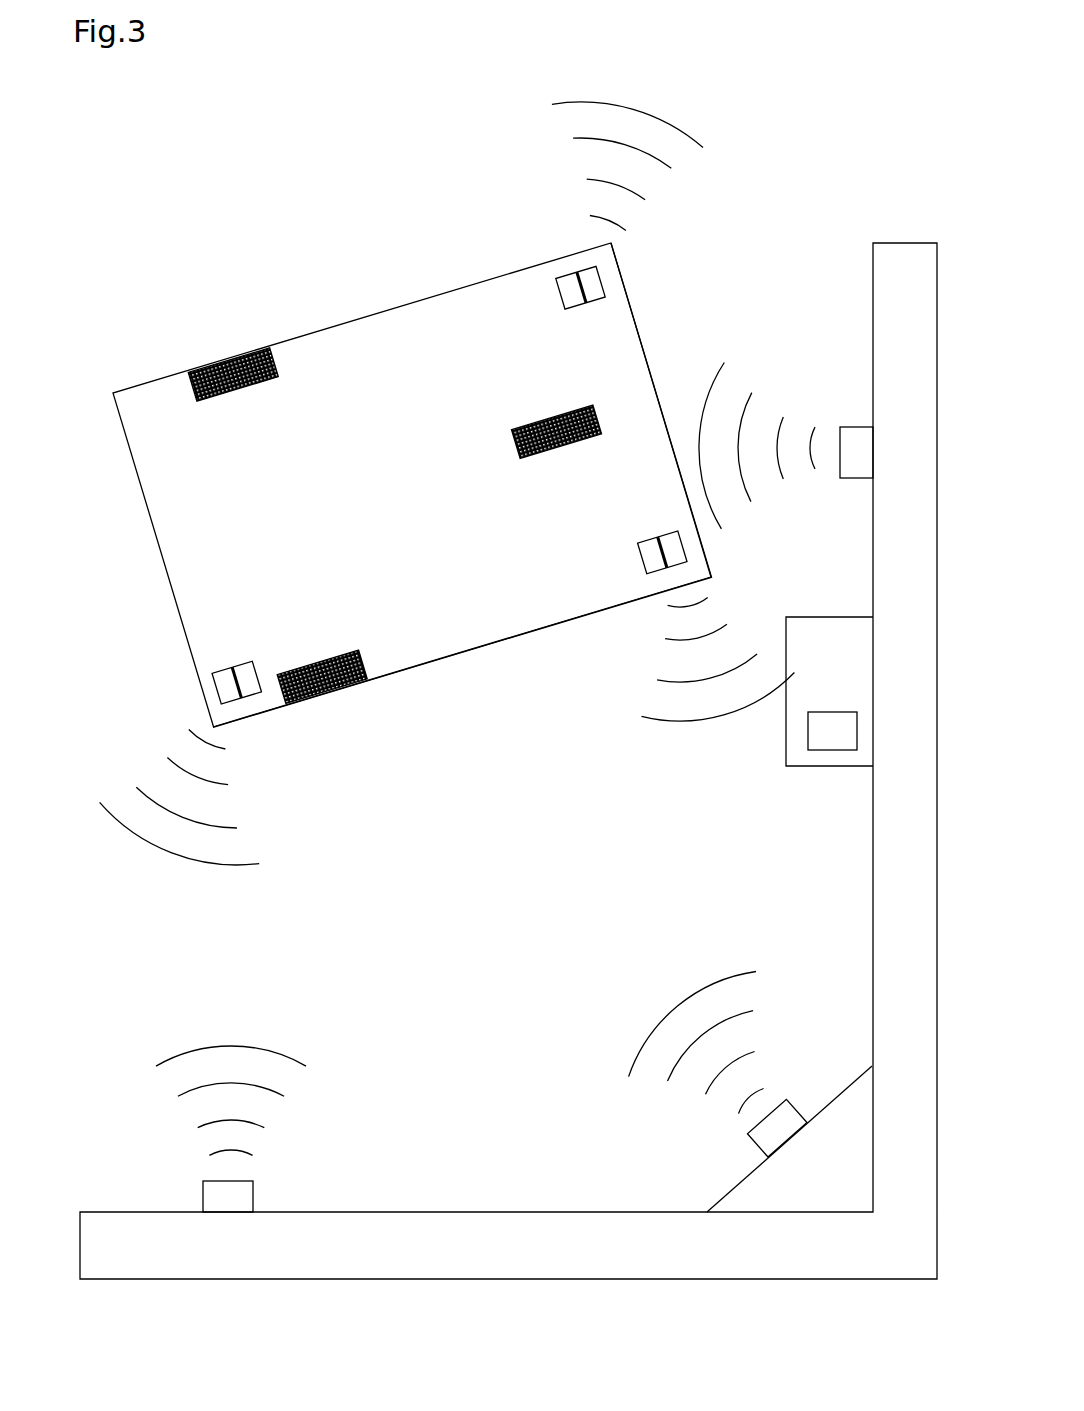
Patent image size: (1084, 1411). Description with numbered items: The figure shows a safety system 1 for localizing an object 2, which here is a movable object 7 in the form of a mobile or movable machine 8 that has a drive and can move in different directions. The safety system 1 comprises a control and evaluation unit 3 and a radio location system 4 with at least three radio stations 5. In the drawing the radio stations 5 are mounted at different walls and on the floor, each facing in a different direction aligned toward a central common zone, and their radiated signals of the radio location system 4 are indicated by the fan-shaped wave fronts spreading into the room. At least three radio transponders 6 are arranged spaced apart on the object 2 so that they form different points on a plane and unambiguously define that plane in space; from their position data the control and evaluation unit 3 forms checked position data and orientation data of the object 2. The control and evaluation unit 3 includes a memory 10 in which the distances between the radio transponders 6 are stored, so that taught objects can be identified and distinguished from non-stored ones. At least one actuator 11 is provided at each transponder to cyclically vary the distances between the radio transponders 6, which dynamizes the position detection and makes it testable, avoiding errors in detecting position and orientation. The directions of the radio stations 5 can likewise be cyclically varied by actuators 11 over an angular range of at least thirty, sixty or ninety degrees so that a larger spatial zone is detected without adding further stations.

The safety system 1 is at (770, 97).
The object 2 is at (347, 320).
The control and evaluation unit 3 is at (791, 769).
The radio location system 4 is at (715, 273).
The radio stations 5 is at (855, 465).
The radio transponders 6 is at (587, 268).
The movable object 7 is at (522, 615).
The movable machine 8 is at (430, 662).
The memory 10 is at (843, 752).
The actuator 11 is at (562, 303).